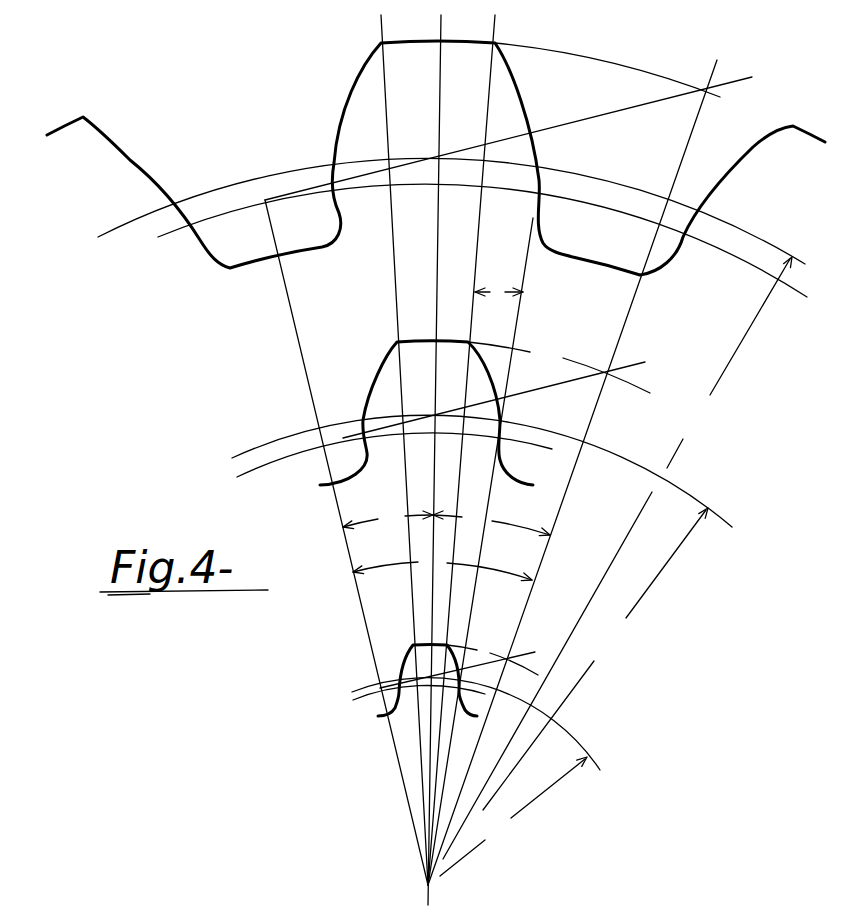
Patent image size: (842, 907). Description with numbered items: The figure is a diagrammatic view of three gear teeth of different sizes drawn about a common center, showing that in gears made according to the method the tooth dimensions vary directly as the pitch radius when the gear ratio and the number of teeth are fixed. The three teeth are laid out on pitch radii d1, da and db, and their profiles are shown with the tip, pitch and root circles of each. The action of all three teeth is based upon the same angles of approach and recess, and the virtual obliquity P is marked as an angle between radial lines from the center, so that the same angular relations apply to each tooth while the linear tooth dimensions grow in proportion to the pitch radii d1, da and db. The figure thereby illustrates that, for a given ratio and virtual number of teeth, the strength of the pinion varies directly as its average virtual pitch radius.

The virtual obliquity P is at (387, 519).
The pitch radius da is at (597, 658).
The pitch radius db is at (619, 557).
The virtual pitch radius d1 is at (515, 815).